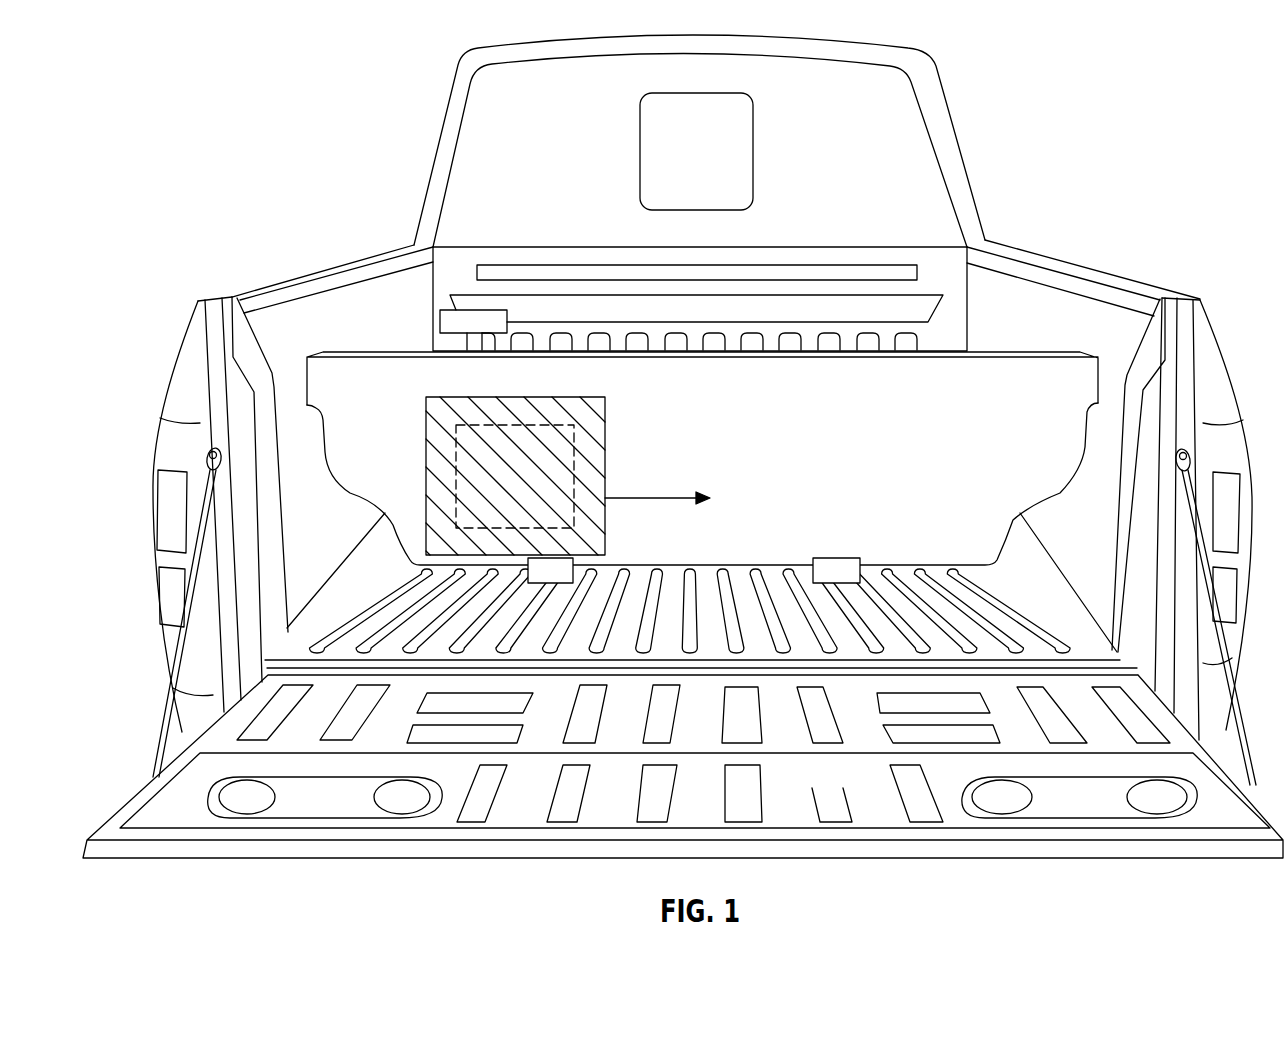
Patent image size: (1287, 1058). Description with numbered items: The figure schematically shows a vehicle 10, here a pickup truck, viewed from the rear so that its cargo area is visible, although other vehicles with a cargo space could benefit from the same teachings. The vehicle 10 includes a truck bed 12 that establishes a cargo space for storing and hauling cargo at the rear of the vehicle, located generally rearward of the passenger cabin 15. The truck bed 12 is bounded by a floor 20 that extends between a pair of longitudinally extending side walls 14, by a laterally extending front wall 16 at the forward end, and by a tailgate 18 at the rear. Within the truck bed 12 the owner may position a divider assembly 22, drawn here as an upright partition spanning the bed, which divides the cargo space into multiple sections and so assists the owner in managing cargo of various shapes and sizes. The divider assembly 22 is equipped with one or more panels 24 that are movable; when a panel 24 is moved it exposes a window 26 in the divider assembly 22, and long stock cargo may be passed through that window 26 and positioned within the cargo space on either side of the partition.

The vehicle 10 is at (1021, 65).
The truck bed 12 is at (371, 304).
The side walls 14 is at (258, 318).
The passenger cabin 15 is at (913, 142).
The front wall 16 is at (768, 273).
The tailgate 18 is at (783, 798).
The floor 20 is at (713, 622).
The divider assembly 22 is at (380, 352).
The panels 24 is at (496, 542).
The window 26 is at (478, 428).